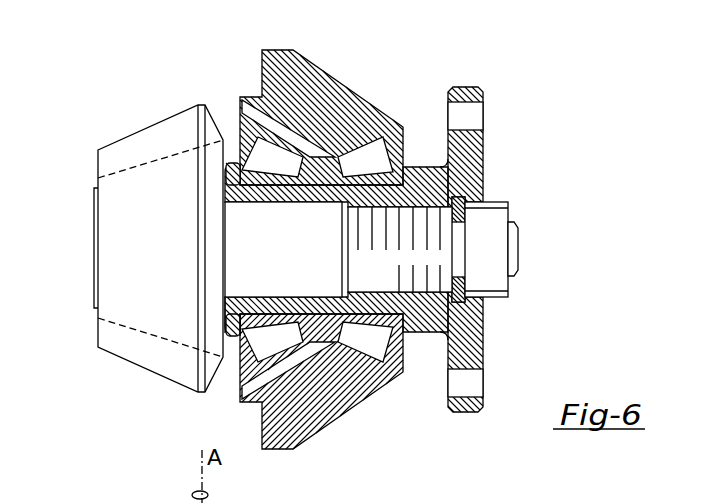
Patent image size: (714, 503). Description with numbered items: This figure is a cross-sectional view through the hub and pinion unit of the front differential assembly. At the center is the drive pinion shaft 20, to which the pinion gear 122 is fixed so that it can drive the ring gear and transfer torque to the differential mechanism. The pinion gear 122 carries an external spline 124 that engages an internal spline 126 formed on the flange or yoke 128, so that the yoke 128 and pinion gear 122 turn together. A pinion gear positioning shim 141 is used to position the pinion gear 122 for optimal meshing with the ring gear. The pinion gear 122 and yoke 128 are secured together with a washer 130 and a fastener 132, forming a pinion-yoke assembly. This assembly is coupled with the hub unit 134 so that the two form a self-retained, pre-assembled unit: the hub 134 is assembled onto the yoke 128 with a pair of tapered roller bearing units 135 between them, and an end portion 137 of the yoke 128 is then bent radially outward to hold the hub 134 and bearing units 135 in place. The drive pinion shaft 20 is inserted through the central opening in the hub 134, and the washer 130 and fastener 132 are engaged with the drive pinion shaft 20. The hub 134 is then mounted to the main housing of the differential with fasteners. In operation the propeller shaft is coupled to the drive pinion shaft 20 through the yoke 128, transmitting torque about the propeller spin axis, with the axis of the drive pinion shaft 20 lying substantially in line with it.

The drive pinion shaft 20 is at (270, 295).
The pinion gear 122 is at (123, 360).
The external spline 124 is at (420, 207).
The internal spline 126 is at (417, 290).
The flange or yoke 128 is at (483, 150).
The washer 130 is at (483, 300).
The fastener 132 is at (510, 213).
The hub unit 134 is at (288, 52).
The tapered roller bearing units 135 is at (355, 140).
The end portion of yoke 137 is at (230, 163).
The pinion gear positioning shim 141 is at (228, 336).